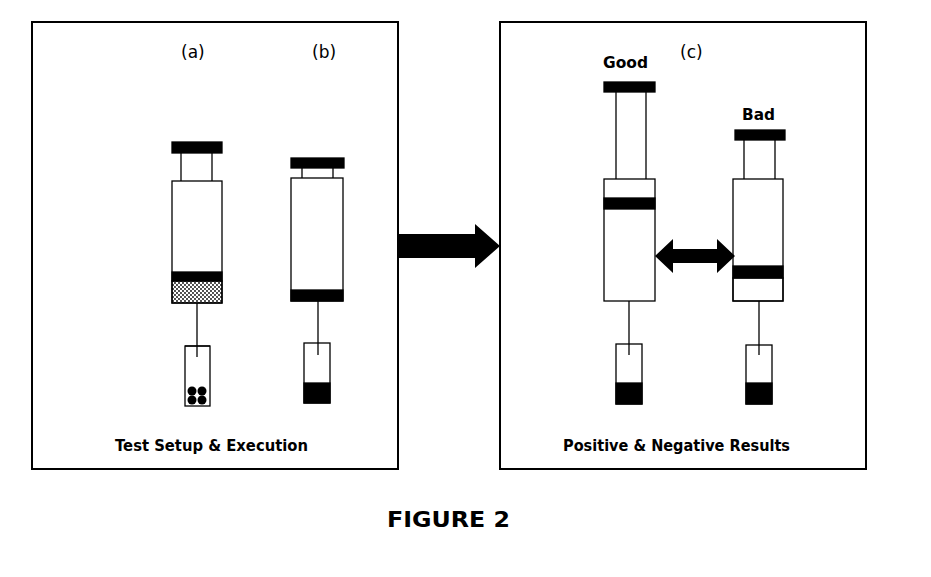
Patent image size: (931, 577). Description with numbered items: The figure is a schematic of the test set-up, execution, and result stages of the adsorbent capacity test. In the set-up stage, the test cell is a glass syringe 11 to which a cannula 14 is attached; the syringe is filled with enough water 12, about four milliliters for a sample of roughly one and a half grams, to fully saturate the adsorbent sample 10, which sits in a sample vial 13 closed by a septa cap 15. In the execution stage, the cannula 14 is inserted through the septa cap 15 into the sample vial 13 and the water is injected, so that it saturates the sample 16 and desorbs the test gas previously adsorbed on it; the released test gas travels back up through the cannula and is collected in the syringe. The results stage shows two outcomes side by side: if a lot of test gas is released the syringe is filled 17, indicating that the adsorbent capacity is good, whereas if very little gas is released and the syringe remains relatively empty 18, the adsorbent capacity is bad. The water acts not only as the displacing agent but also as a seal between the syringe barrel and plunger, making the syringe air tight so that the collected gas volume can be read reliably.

The adsorbent sample 10 is at (169, 400).
The syringe 11 is at (156, 210).
The water 12 is at (153, 293).
The sample vial 13 is at (168, 366).
The cannula 14 is at (186, 330).
The septa cap 15 is at (216, 342).
The saturated sample 16 is at (293, 399).
The filled syringe 17 is at (603, 245).
The relatively empty syringe 18 is at (792, 296).